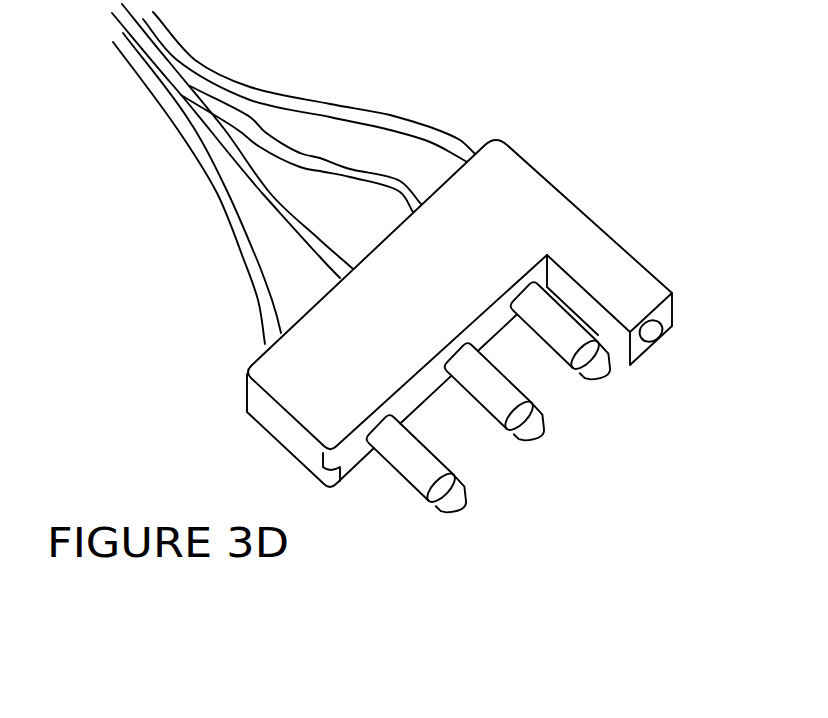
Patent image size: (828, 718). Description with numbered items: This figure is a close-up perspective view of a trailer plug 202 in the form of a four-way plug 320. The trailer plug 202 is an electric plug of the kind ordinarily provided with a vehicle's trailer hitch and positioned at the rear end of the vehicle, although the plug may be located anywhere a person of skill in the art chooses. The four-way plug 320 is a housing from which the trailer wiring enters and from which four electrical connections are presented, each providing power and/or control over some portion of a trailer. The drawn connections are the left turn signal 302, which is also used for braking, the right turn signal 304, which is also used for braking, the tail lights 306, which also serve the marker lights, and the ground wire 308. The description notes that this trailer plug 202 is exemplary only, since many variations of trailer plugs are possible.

The trailer plug 202 is at (164, 307).
The 4-way plug 320 is at (515, 190).
The left turn signal connection 302 is at (520, 437).
The right turn signal connection 304 is at (427, 482).
The tail lights connection 306 is at (594, 377).
The ground wire 308 is at (658, 330).